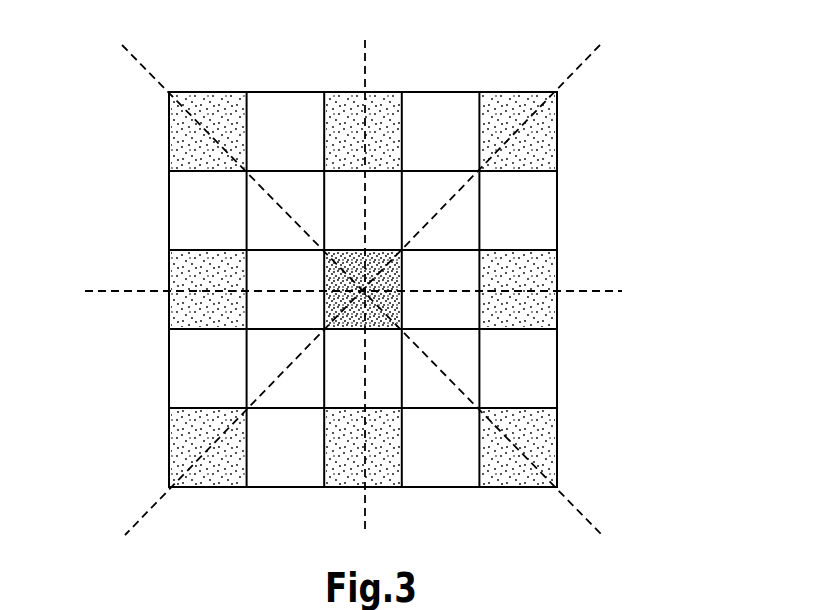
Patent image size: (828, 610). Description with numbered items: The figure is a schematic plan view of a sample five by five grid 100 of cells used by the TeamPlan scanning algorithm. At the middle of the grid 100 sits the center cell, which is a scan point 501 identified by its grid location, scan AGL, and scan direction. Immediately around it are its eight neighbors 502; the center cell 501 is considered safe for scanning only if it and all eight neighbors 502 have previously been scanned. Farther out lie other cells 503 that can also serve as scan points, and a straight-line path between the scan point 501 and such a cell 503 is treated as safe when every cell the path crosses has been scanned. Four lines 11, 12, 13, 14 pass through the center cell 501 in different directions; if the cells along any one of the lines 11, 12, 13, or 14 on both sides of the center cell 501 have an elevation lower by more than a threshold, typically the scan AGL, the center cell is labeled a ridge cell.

The grid 100 is at (660, 143).
The scan point 501 is at (363, 290).
The neighbors 502 is at (293, 190).
The scan point 503 is at (273, 132).
The direction 11 is at (363, 53).
The direction 12 is at (578, 78).
The direction 13 is at (580, 291).
The direction 14 is at (573, 505).